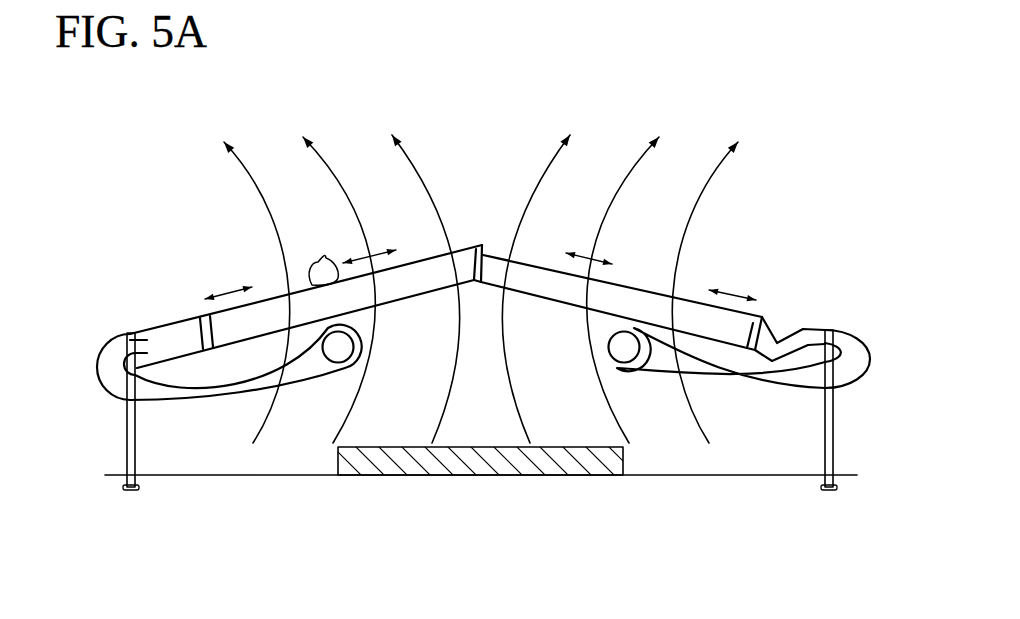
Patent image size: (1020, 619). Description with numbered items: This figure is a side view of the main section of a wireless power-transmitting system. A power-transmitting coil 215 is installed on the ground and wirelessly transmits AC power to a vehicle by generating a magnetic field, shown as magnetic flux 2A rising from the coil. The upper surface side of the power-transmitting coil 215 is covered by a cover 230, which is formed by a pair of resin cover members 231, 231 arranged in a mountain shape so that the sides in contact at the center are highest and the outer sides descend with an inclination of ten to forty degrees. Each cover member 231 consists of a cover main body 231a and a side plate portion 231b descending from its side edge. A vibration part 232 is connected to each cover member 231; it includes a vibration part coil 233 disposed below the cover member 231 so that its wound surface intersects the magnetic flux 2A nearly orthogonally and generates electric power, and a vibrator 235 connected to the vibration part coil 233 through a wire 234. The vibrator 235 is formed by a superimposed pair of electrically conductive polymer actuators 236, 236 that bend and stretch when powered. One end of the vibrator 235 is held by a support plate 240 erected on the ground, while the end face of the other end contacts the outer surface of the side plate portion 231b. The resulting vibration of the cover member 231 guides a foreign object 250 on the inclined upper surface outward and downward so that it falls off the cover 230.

The magnetic flux 2A is at (337, 183).
The power-transmitting coil 215 is at (510, 463).
The cover 230 is at (482, 311).
The cover member 231 is at (446, 284).
The cover main body 231a is at (430, 257).
The side plate portion 231b is at (224, 347).
The vibration part 232 is at (181, 309).
The vibration part coil 233 is at (344, 369).
The wire 234 is at (201, 391).
The vibrator 235 is at (482, 318).
The electrically conductive polymer actuator 236 is at (150, 354).
The support plate 240 is at (126, 430).
The foreign object 250 is at (318, 257).